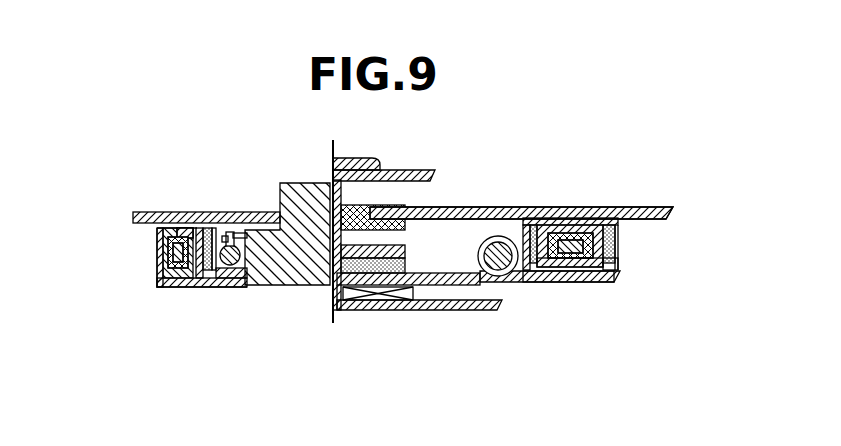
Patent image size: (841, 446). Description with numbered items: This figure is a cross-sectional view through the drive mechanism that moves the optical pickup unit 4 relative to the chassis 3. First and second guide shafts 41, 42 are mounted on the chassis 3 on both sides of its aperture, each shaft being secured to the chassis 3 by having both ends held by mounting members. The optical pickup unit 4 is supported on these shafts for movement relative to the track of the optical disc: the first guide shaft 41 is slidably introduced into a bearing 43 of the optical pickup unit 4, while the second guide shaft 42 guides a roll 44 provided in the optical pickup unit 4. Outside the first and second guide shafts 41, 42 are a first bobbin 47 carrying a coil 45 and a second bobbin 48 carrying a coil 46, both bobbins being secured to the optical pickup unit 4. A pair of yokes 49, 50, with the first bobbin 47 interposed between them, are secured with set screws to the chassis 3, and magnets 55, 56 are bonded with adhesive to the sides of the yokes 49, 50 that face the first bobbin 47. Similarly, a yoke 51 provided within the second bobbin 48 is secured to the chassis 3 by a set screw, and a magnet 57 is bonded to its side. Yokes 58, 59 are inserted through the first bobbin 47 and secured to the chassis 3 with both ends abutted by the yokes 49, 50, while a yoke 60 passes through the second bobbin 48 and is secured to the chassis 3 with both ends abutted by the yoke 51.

The chassis 3 is at (660, 207).
The optical pickup unit 4 is at (303, 190).
The first guide shaft 41 is at (493, 283).
The second guide shaft 42 is at (242, 287).
The bearing 43 is at (490, 237).
The roll 44 is at (230, 232).
The coil 45 is at (568, 225).
The coil 46 is at (157, 240).
The first bobbin 47 is at (602, 220).
The second bobbin 48 is at (157, 268).
The yoke 49 is at (618, 262).
The yoke 50 is at (527, 282).
The yoke 51 is at (212, 267).
The magnet 55 is at (618, 245).
The magnet 56 is at (538, 282).
The magnet 57 is at (200, 287).
The yoke 58 is at (593, 282).
The yoke 59 is at (576, 276).
The yoke 60 is at (175, 242).